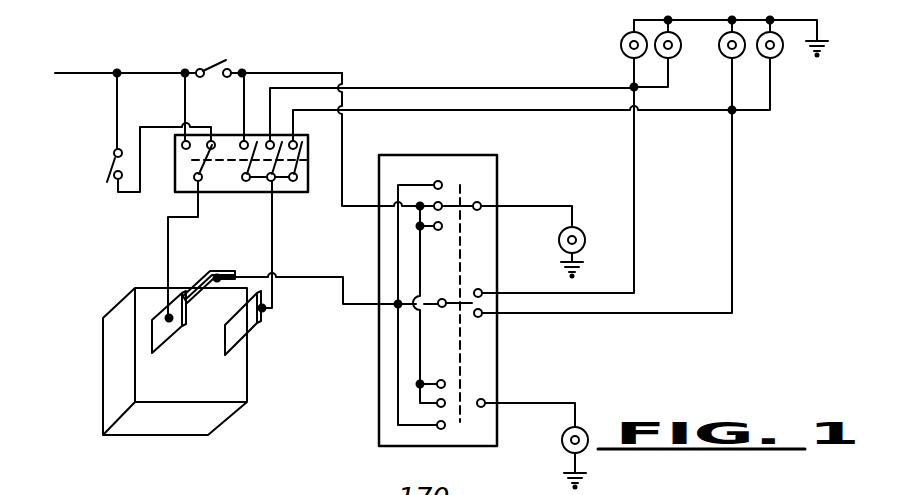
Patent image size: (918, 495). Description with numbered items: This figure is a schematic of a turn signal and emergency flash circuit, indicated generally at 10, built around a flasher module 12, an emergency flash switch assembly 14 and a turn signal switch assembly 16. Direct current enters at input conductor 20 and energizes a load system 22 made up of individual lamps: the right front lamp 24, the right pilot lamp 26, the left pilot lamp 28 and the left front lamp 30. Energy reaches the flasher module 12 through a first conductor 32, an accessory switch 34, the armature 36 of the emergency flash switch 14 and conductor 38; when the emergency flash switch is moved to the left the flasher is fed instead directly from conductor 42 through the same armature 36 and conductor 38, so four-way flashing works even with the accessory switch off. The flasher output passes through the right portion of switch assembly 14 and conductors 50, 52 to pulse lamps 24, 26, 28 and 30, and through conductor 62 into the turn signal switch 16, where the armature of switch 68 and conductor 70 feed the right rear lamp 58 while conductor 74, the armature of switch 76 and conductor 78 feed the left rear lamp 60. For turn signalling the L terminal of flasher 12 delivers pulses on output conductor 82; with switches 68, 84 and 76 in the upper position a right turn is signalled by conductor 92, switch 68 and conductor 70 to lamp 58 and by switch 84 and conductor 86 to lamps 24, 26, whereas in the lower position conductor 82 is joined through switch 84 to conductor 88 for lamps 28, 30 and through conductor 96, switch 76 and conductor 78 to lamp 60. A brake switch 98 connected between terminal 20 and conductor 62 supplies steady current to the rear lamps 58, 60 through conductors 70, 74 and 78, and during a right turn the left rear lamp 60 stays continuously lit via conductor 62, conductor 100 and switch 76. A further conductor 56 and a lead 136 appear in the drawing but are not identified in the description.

The lighting control system 10 is at (443, 60).
The flasher module 12 is at (203, 420).
The emergency flash switch assembly 14 is at (308, 154).
The turn signal switch assembly 16 is at (497, 175).
The input conductor 20 is at (96, 71).
The load system 22 is at (750, 118).
The right front lamp 24 is at (621, 46).
The right indicator or pilot lamp 26 is at (677, 58).
The left indicator or pilot lamp 28 is at (742, 57).
The left front lamp 30 is at (780, 58).
The first conductor 32 is at (117, 103).
The accessory switch 34 is at (112, 163).
The switch armature 36 is at (212, 193).
The conductor 38 is at (168, 240).
The conductor 42 is at (185, 92).
The conductor 50 is at (481, 78).
The conductor 52 is at (497, 112).
The conductor 56 is at (298, 227).
The right rear lamp 58 is at (586, 235).
The left rear lamp 60 is at (588, 428).
The conductor 62 is at (310, 70).
The switch 68 is at (476, 221).
The conductor 70 is at (562, 194).
The conductor 74 is at (430, 360).
The switch 76 is at (479, 424).
The conductor 78 is at (556, 399).
The output conductor 82 is at (307, 280).
The third switch 84 is at (437, 323).
The conductor 86 is at (634, 213).
The conductor 88 is at (735, 183).
The conductor 92 is at (398, 247).
The conductor 96 is at (398, 394).
The brake switch 98 is at (226, 56).
The conductor 100 is at (422, 284).
The conductor 136 is at (585, 493).